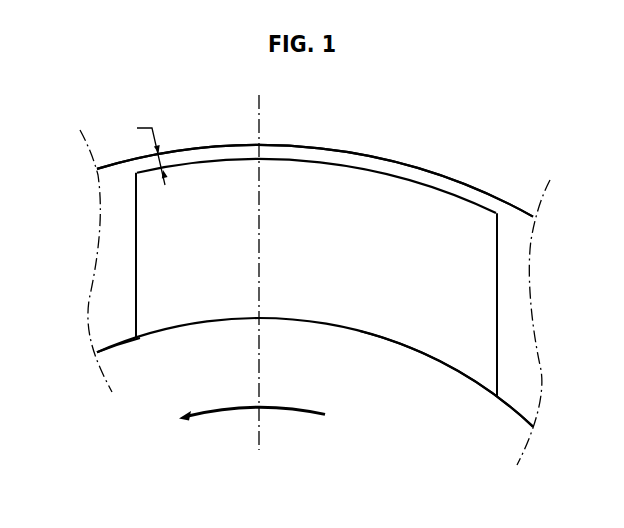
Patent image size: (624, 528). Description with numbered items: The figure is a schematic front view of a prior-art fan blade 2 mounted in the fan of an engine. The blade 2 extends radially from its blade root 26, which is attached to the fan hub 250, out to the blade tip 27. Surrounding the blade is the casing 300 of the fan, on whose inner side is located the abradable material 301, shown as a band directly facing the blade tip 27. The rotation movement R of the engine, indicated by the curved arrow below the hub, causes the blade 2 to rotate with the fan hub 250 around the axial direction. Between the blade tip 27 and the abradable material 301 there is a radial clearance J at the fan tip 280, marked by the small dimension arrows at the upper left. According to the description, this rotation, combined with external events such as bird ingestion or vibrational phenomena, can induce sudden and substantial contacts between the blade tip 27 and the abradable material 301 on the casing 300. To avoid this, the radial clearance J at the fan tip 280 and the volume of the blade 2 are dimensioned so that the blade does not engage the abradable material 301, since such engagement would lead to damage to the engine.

The blade 2 is at (385, 268).
The blade root 26 is at (361, 333).
The blade tip 27 is at (348, 168).
The fan hub 250 is at (111, 346).
The fan tip 280 is at (378, 400).
The casing 300 is at (507, 210).
The abradable material 301 is at (405, 168).
The radial clearance J is at (152, 147).
The rotation movement R is at (287, 407).